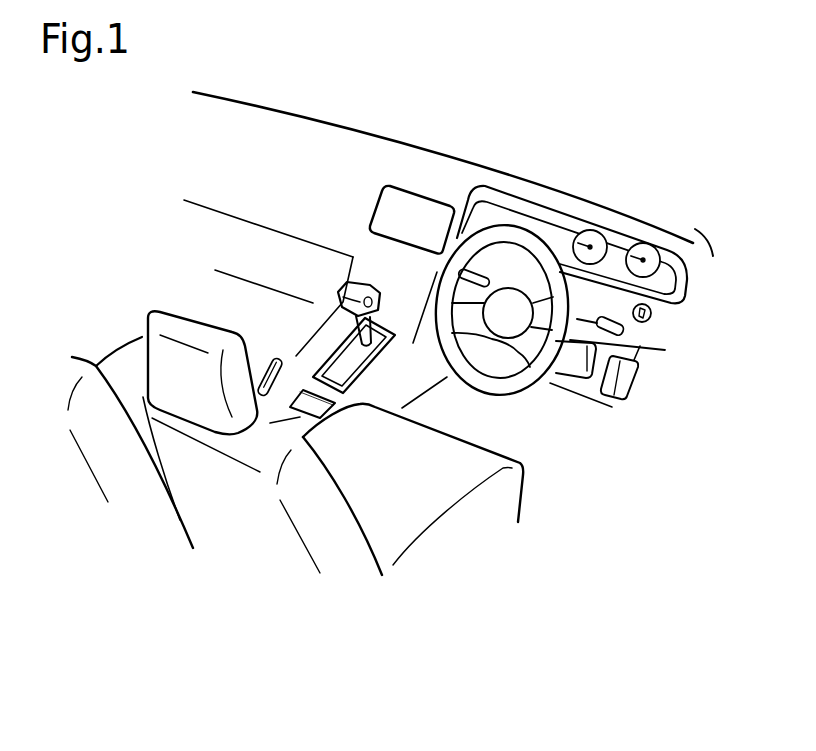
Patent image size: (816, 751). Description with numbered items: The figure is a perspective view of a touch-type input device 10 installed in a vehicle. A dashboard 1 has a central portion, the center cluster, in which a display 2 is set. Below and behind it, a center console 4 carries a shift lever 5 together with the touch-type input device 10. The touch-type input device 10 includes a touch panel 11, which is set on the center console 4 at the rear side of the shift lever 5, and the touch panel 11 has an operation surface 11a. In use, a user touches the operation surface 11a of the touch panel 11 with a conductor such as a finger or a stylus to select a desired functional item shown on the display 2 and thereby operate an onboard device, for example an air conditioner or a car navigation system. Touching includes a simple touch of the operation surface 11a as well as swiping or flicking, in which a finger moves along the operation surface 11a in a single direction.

The dashboard 1 is at (363, 138).
The display 2 is at (414, 199).
The center console 4 is at (320, 338).
The shift lever 5 is at (380, 314).
The touch-type input device 10 is at (298, 413).
The touch panel 11 is at (362, 425).
The operation surface 11a is at (326, 412).